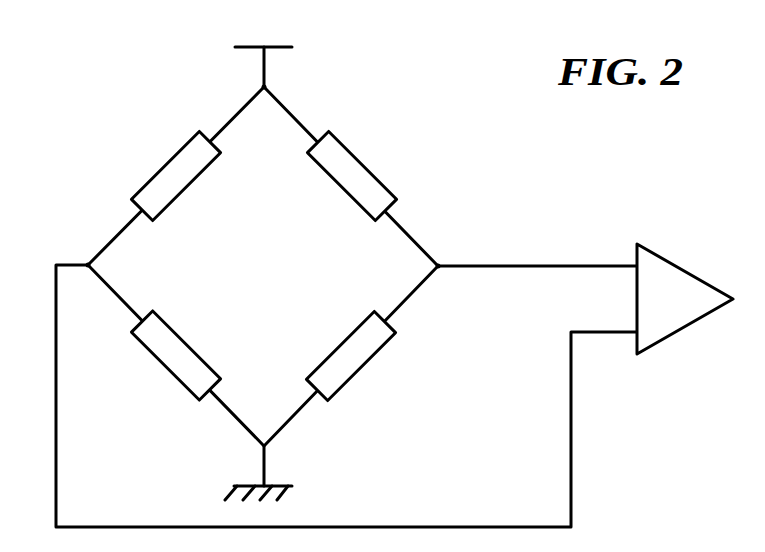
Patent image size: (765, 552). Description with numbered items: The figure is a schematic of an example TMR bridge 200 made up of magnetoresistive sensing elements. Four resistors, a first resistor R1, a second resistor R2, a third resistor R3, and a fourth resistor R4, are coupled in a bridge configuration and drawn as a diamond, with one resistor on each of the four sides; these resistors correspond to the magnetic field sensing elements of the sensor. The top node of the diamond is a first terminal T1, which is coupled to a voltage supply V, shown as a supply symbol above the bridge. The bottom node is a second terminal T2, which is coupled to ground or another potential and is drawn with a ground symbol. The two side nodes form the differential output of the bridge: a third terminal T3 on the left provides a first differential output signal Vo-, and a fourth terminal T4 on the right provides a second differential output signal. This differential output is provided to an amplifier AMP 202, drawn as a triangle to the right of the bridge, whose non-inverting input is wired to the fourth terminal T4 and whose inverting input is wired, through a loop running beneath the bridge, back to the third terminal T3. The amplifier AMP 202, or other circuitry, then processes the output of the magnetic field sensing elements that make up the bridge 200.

The TMR bridge 200 is at (125, 64).
The amplifier AMP 202 is at (687, 272).
The first terminal T1 is at (262, 70).
The second terminal T2 is at (262, 461).
The third terminal T3 is at (88, 264).
The fourth terminal T4 is at (440, 265).
The first resistor R1 is at (178, 153).
The second resistor R2 is at (350, 152).
The third resistor R3 is at (170, 371).
The fourth resistor R4 is at (356, 373).
The voltage supply V is at (263, 53).
The first differential output signal Vo- is at (90, 265).